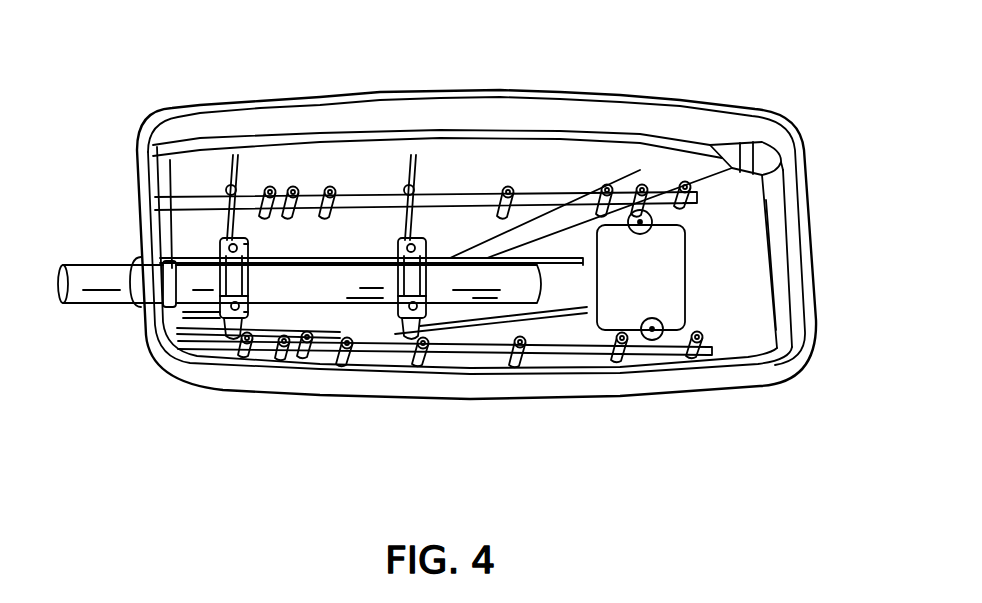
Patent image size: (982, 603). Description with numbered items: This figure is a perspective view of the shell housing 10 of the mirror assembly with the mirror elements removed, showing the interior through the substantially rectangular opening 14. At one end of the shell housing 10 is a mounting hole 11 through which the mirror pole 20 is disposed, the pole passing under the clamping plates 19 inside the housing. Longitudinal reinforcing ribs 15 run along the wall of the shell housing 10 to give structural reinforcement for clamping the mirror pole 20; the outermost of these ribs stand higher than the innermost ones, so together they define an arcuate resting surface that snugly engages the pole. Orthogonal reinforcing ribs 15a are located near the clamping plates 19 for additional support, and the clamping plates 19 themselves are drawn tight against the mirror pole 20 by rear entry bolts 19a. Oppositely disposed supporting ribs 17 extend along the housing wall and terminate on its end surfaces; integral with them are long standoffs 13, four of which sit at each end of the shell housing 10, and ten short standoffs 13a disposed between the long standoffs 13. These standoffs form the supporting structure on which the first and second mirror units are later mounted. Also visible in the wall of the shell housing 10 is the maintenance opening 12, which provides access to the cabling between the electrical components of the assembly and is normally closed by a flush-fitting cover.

The shell housing 10 is at (208, 108).
The mounting hole 11 is at (130, 253).
The maintenance opening 12 is at (667, 280).
The long standoffs 13 is at (226, 176).
The short standoffs 13a is at (395, 190).
The opening 14 is at (760, 310).
The longitudinal reinforcing ribs 15 is at (505, 312).
The orthogonal reinforcing ribs 15a is at (232, 305).
The supporting ribs 17 is at (457, 195).
The clamping plates 19 is at (235, 278).
The rear entry bolts 19a is at (253, 300).
The mirror pole 20 is at (90, 292).